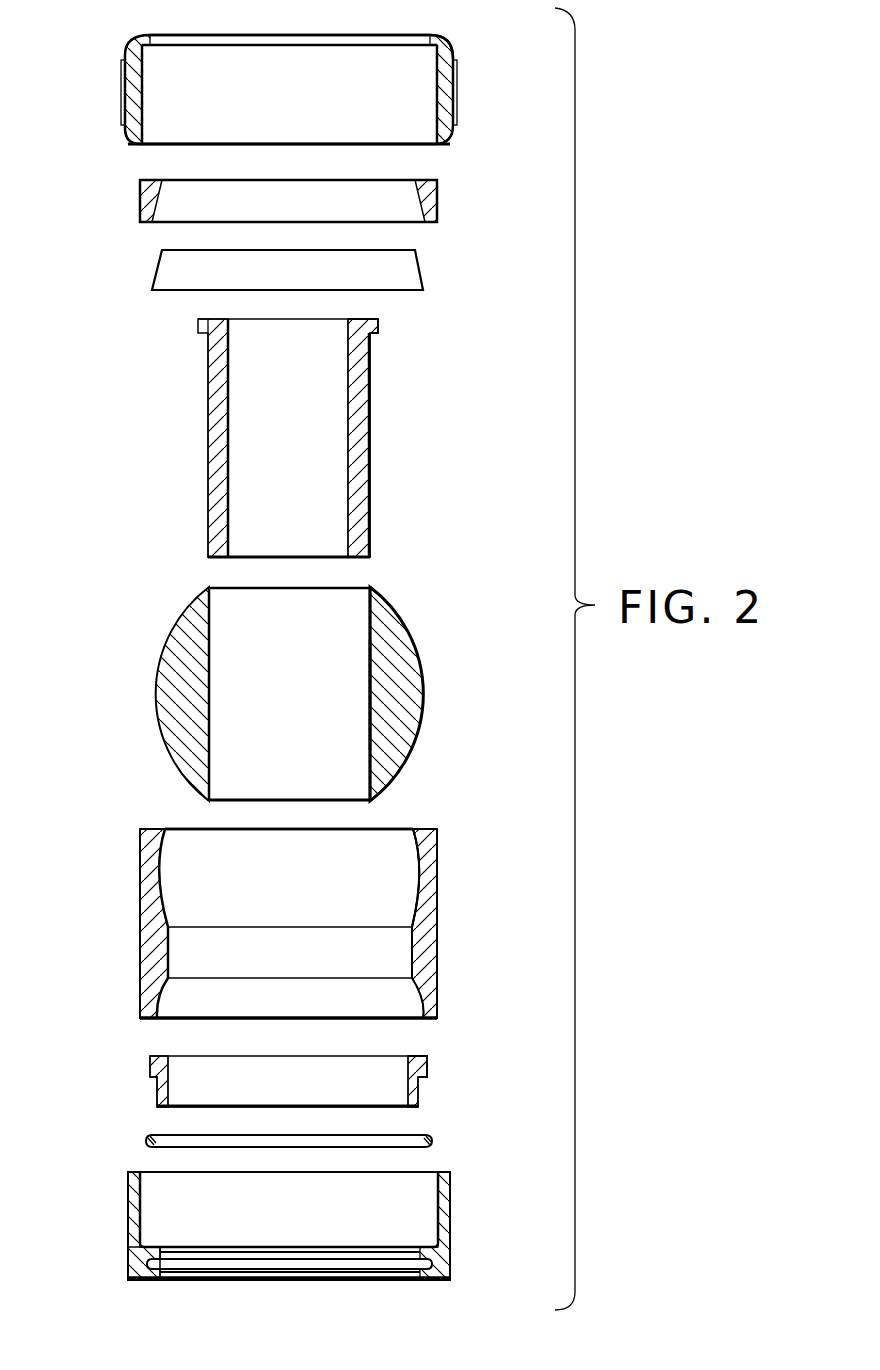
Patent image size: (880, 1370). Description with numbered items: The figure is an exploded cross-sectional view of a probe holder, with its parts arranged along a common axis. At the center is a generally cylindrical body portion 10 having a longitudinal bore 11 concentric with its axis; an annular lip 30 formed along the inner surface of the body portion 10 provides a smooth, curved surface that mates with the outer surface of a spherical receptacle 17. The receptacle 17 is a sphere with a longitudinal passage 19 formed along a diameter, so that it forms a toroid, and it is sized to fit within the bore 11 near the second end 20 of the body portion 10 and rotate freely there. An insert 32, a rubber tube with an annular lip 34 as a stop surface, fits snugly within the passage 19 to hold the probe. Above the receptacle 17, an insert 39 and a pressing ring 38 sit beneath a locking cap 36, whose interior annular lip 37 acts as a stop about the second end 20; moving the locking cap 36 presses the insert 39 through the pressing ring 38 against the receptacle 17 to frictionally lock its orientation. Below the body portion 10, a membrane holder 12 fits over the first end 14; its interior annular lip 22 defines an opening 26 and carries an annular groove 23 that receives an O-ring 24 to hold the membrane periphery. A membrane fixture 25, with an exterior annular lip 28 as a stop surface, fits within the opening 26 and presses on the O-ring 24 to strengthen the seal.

The body portion 10 is at (130, 928).
The longitudinal bore 11 is at (412, 950).
The membrane holder 12 is at (118, 1215).
The first end 14 is at (405, 1019).
The receptacle 17 is at (143, 694).
The longitudinal passage 19 is at (372, 676).
The second end 20 is at (382, 829).
The annular lip 22 is at (142, 1273).
The annular groove 23 is at (347, 1263).
The O-ring 24 is at (135, 1138).
The membrane fixture 25 is at (138, 1082).
The opening 26 is at (300, 1282).
The annular lip 28 is at (427, 1078).
The annular lip 30 is at (422, 870).
The insert 32 is at (200, 435).
The annular lip 34 is at (380, 326).
The locking cap 36 is at (112, 87).
The annular lip 37 is at (433, 43).
The pressing ring 38 is at (127, 200).
The insert 39 is at (145, 270).